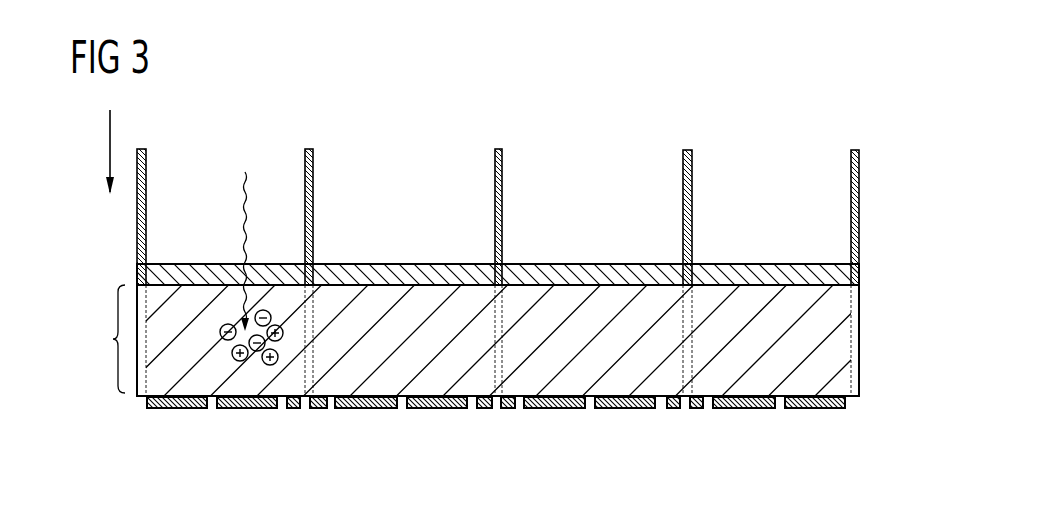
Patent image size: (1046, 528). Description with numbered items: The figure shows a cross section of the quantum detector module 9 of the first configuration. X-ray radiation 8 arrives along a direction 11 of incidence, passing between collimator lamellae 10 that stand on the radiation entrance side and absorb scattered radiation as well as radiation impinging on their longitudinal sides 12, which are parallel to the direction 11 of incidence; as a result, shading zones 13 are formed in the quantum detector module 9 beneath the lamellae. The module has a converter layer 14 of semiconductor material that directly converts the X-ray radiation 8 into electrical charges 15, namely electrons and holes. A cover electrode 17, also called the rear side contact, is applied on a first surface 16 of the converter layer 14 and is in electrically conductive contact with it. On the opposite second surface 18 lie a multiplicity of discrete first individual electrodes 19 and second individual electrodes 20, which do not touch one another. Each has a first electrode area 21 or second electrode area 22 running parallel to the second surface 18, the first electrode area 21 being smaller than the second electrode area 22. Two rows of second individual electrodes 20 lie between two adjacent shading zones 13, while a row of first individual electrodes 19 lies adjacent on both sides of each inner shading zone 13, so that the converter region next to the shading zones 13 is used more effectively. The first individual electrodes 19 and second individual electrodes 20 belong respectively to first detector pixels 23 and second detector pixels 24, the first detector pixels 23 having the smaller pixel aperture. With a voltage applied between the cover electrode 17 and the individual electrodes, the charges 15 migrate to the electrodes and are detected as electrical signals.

The X-ray radiation 8 is at (248, 208).
The quantum detector module 9 is at (110, 339).
The collimator lamellae 10 is at (858, 196).
The direction of incidence 11 is at (110, 128).
The longitudinal sides 12 is at (687, 148).
The shading zones 13 is at (700, 300).
The converter layer 14 is at (835, 304).
The electrical charges 15 is at (226, 360).
The first surface 16 is at (404, 283).
The cover electrode 17 is at (573, 281).
The second surface 18 is at (142, 398).
The first individual electrodes 19 is at (698, 410).
The second individual electrodes 20 is at (815, 409).
The first electrode area 21 is at (673, 397).
The second electrode area 22 is at (840, 395).
The first detector pixels 23 is at (330, 421).
The second detector pixels 24 is at (398, 421).